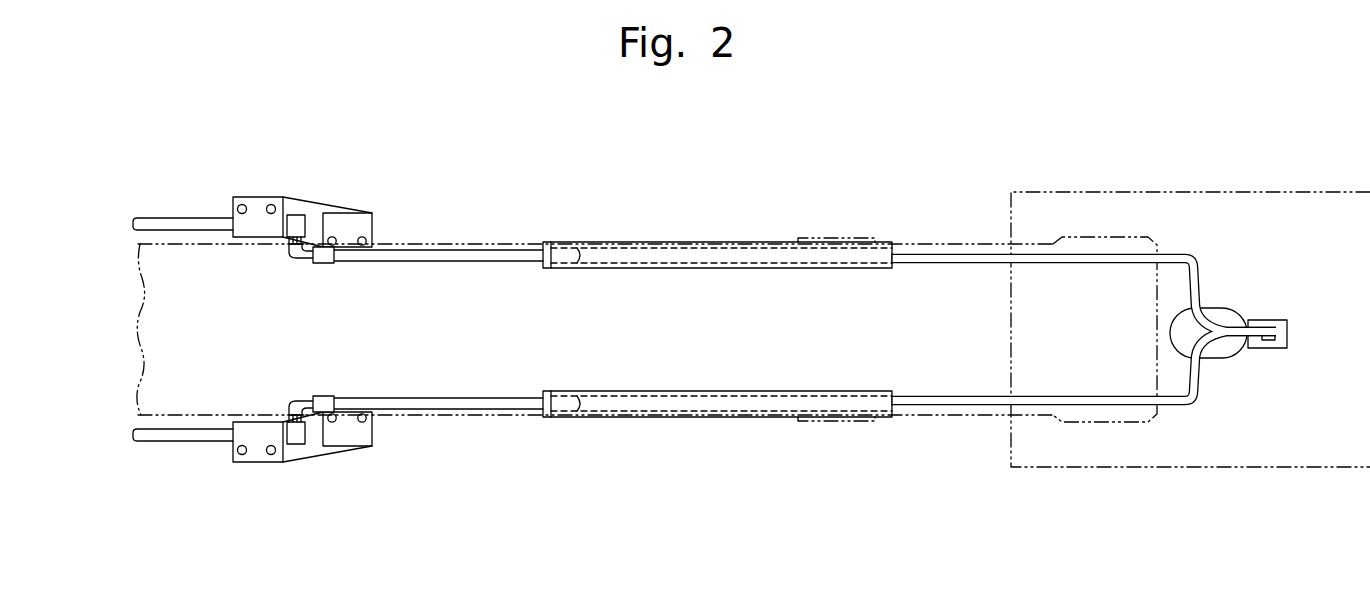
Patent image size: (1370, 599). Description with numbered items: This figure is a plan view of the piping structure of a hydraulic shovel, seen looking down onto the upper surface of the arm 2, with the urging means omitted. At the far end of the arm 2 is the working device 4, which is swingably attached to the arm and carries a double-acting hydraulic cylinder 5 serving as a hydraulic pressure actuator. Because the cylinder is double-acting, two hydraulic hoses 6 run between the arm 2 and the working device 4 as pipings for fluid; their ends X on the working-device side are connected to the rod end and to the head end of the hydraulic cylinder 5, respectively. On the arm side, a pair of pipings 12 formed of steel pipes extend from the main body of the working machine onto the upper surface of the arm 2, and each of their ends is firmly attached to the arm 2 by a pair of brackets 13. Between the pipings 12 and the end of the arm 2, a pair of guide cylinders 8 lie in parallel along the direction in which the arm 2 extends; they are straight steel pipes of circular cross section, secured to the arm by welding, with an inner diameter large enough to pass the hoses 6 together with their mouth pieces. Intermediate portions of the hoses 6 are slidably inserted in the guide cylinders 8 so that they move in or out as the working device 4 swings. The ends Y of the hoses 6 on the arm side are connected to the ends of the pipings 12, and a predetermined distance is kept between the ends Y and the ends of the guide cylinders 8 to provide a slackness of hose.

The arm 2 is at (483, 415).
The working device 4 is at (1118, 467).
The hydraulic cylinder 5 is at (1220, 358).
The hydraulic hoses 6 is at (945, 253).
The guide cylinders 8 is at (663, 242).
The pipings 12 is at (183, 218).
The brackets 13 is at (262, 197).
The ends of the hoses on the side of the working device X is at (1277, 320).
The ends of the hoses on the side of the arm Y is at (293, 258).